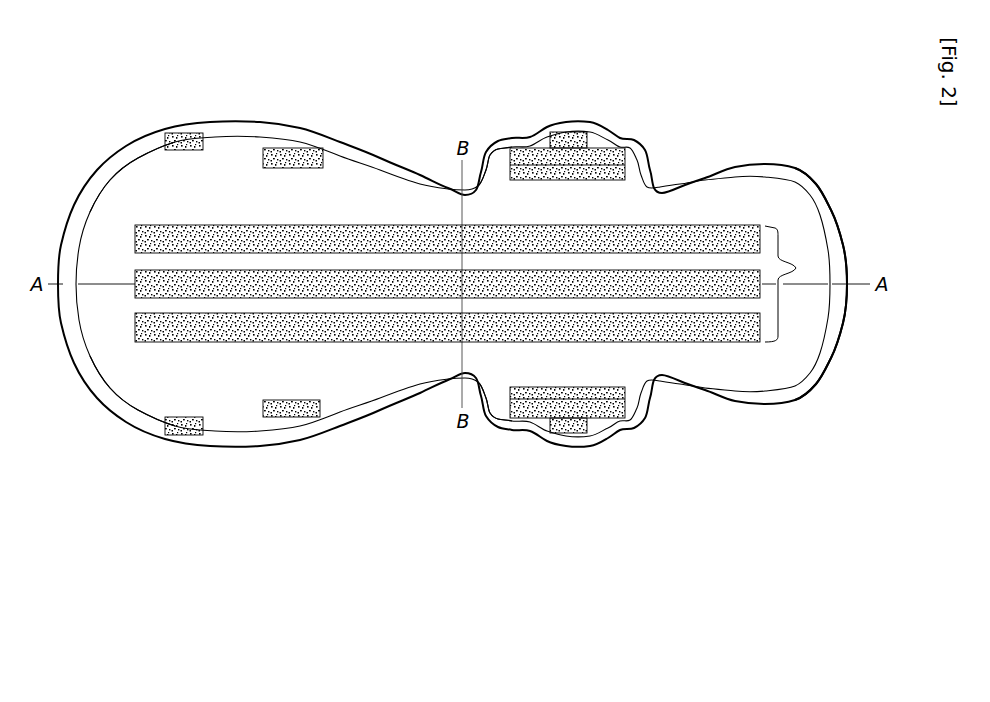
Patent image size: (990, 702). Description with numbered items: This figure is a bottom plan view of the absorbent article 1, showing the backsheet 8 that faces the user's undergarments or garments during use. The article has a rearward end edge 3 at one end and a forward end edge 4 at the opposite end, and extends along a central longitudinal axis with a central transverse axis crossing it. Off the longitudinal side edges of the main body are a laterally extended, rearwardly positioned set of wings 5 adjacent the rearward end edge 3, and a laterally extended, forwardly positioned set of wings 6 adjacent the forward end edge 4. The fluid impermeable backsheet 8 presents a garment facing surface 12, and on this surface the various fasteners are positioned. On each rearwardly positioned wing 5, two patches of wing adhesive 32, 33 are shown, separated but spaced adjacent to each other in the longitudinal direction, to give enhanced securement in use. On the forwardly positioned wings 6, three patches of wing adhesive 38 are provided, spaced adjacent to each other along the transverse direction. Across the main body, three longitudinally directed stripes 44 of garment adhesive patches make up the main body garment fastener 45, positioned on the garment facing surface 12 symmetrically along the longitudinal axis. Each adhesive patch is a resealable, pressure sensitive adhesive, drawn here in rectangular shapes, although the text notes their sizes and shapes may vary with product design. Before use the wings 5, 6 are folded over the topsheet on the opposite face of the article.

The absorbent article 1 is at (380, 494).
The rearward end edge 3 is at (68, 218).
The forward end edge 4 is at (845, 232).
The rearwardly positioned set of wings 5 is at (147, 157).
The forwardly positioned set of wings 6 is at (502, 160).
The backsheet 8 is at (93, 265).
The garment facing surface 12 is at (326, 200).
The wing adhesive 32 is at (290, 150).
The wing adhesive 33 is at (187, 140).
The wing adhesive 38 is at (560, 175).
The longitudinally directed stripes of garment adhesive patches 44 is at (716, 342).
The main body garment fastener 45 is at (797, 265).